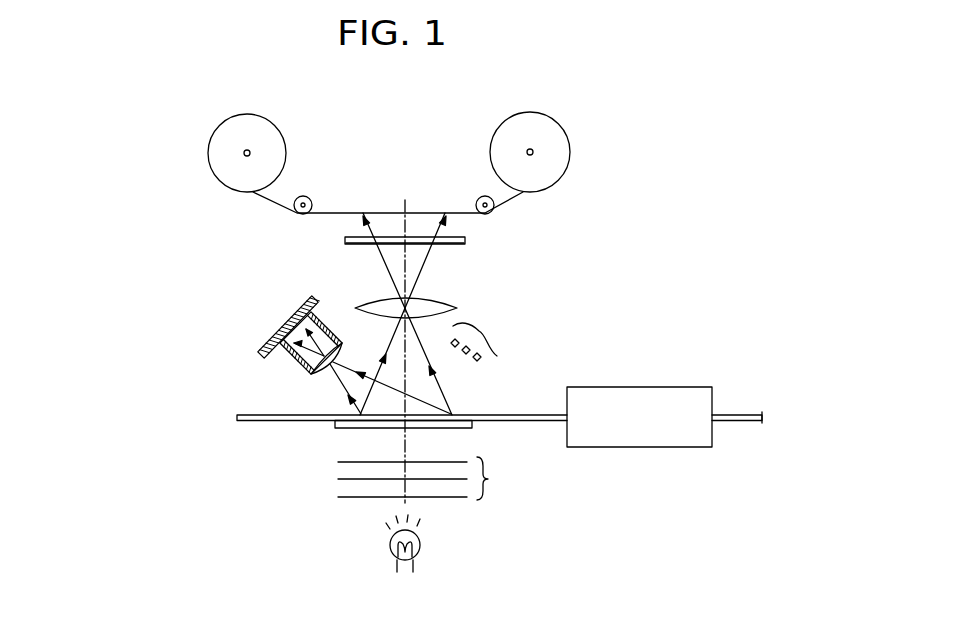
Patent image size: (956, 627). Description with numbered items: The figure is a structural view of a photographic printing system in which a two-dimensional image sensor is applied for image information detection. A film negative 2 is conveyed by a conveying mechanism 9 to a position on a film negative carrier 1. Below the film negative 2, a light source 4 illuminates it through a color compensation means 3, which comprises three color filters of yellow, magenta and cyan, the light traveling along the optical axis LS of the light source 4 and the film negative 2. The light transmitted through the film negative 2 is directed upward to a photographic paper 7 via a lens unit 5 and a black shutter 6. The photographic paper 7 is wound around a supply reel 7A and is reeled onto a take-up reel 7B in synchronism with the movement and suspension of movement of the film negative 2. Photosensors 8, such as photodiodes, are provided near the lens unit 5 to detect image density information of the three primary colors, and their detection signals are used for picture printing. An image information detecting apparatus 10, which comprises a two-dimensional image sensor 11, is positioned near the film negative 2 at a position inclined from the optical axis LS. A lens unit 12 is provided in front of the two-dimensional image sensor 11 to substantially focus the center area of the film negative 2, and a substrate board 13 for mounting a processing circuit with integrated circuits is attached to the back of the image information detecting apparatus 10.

The film negative carrier 1 is at (466, 429).
The film negative 2 is at (267, 423).
The color compensation means 3 is at (489, 482).
The light source 4 is at (390, 545).
The lens unit 5 is at (433, 300).
The black shutter 6 is at (465, 241).
The photographic paper 7 is at (323, 212).
The supply reel 7A is at (210, 139).
The take-up reel 7B is at (570, 142).
The photosensors 8 is at (566, 338).
The conveying mechanism 9 is at (712, 387).
The image information detecting apparatus 10 is at (218, 359).
The two-dimensional image sensor 11 is at (293, 362).
The lens unit 12 is at (337, 354).
The substrate board 13 is at (290, 305).
The optical axis LS is at (407, 200).